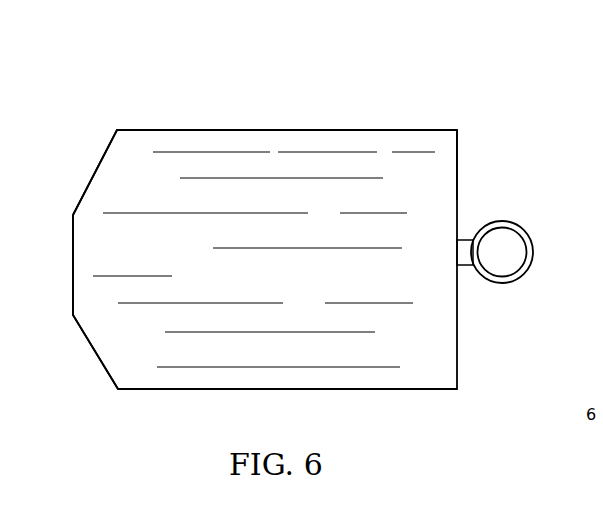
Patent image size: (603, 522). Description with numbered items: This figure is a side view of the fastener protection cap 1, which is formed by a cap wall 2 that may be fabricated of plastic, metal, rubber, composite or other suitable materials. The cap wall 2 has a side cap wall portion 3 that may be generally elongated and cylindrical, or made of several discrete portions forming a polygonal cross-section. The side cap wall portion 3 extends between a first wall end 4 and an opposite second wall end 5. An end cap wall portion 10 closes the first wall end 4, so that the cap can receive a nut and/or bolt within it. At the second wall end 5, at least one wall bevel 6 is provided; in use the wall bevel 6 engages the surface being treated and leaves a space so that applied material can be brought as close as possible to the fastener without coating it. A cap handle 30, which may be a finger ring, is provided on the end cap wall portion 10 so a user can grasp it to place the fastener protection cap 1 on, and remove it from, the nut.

The fastener protection cap 1 is at (240, 80).
The cap wall 2 is at (312, 130).
The side cap wall portion 3 is at (168, 132).
The first wall end 4 is at (460, 128).
The second wall end 5 is at (115, 131).
The wall bevel 6 is at (73, 235).
The end cap wall portion 10 is at (458, 163).
The cap handle 30 is at (534, 252).